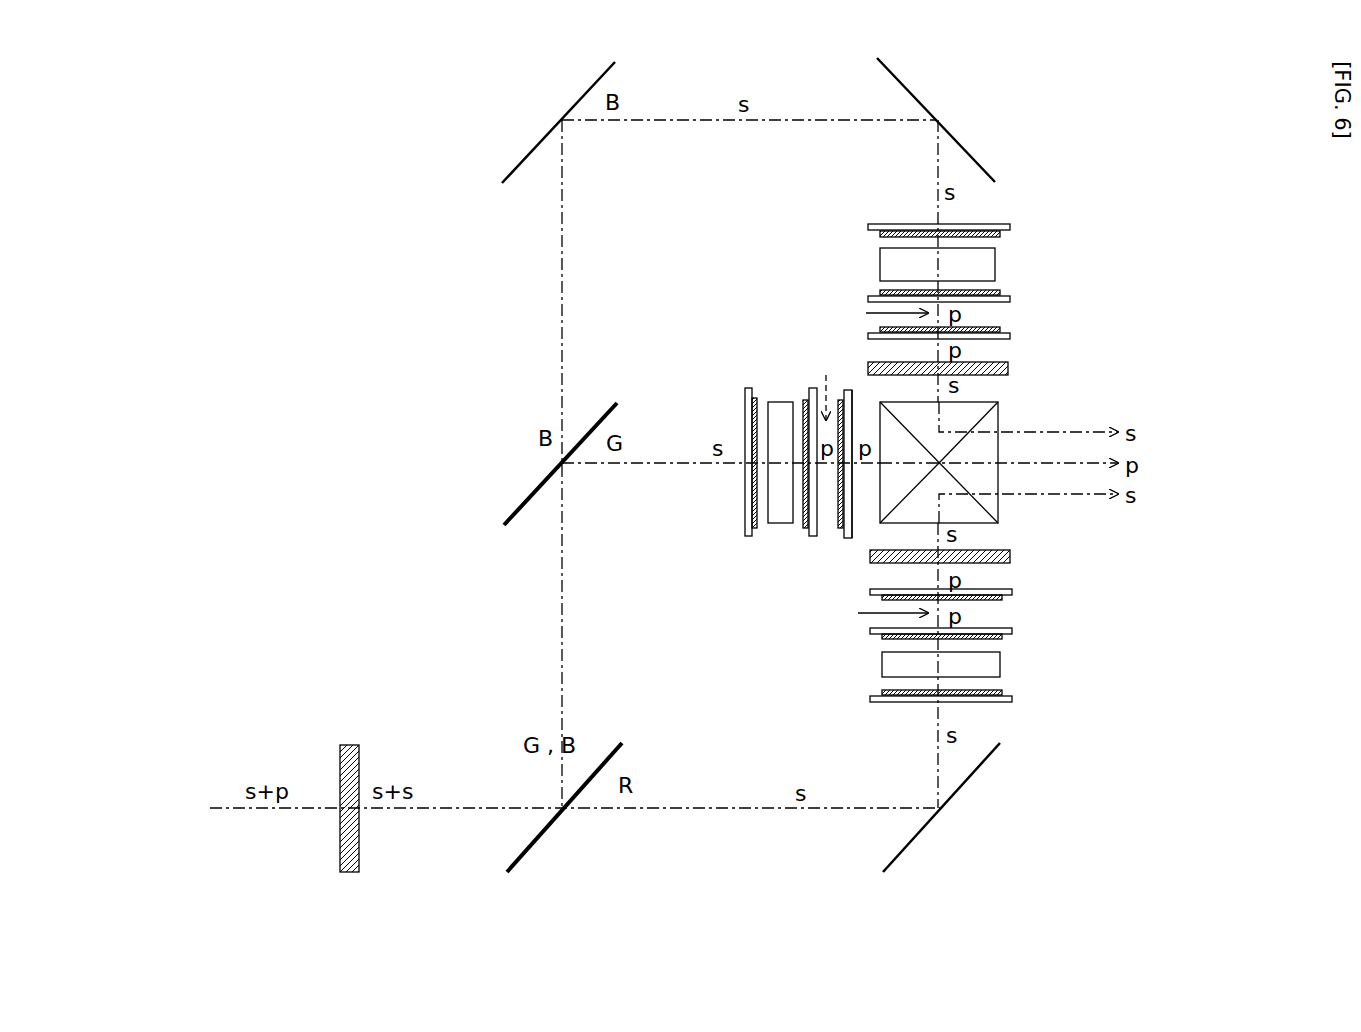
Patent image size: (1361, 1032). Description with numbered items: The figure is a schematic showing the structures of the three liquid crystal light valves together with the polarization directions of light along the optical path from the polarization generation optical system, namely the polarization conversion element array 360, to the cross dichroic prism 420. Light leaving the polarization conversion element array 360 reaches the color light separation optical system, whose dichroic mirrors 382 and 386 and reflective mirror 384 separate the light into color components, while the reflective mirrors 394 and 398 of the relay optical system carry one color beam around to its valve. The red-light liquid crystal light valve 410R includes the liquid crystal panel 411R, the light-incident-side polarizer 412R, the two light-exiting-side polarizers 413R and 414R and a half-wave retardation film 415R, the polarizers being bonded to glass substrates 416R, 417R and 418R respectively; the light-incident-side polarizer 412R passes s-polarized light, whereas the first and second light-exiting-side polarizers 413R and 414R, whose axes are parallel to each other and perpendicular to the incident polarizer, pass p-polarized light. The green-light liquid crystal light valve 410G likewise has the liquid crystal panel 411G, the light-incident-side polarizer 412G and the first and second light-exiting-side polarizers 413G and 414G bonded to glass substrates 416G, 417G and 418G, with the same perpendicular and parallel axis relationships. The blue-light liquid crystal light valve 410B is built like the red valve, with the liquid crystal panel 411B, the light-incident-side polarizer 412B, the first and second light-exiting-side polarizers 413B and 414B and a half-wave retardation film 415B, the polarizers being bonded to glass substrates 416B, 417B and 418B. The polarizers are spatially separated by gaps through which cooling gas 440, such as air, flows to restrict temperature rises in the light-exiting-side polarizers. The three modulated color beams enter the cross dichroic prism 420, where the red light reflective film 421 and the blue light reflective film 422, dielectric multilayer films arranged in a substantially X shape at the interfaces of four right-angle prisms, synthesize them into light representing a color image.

The polarization conversion element array 360 is at (340, 745).
The dichroic mirror 382 is at (537, 848).
The reflective mirror 384 is at (913, 840).
The dichroic mirror 386 is at (540, 487).
The reflective mirror 394 is at (585, 95).
The reflective mirror 398 is at (915, 95).
The blue-light liquid crystal light valve 410B is at (1072, 246).
The green-light liquid crystal light valve 410G is at (716, 579).
The red-light liquid crystal light valve 410R is at (1082, 707).
The liquid crystal panel 411B is at (995, 264).
The light-incident-side polarizer 412B is at (1000, 234).
The first light-exiting-side polarizer 413B is at (1000, 292).
The second light-exiting-side polarizer 414B is at (1000, 329).
The λ/2 retardation film 415B is at (1016, 355).
The glass substrate 416B is at (1010, 227).
The glass substrate 417B is at (1010, 299).
The glass substrate 418B is at (1010, 336).
The liquid crystal panel 411G is at (806, 537).
The light-incident-side polarizer 412G is at (781, 524).
The first light-exiting-side polarizer 413G is at (813, 537).
The second light-exiting-side polarizer 414G is at (848, 538).
The glass substrate 416G is at (748, 537).
The glass substrate 417G is at (841, 537).
The glass substrate 418G is at (855, 538).
The liquid crystal panel 411R is at (1000, 664).
The light-incident-side polarizer 412R is at (1002, 692).
The first light-exiting-side polarizer 413R is at (1002, 637).
The second light-exiting-side polarizer 414R is at (1002, 598).
The λ/2 retardation film 415R is at (1010, 556).
The glass substrate 416R is at (1027, 780).
The glass substrate 417R is at (1012, 631).
The glass substrate 418R is at (1012, 592).
The cross dichroic prism 420 is at (1000, 505).
The red light reflective film 421 is at (1000, 418).
The blue light reflective film 422 is at (1000, 515).
The cooling gas 440 is at (866, 313).